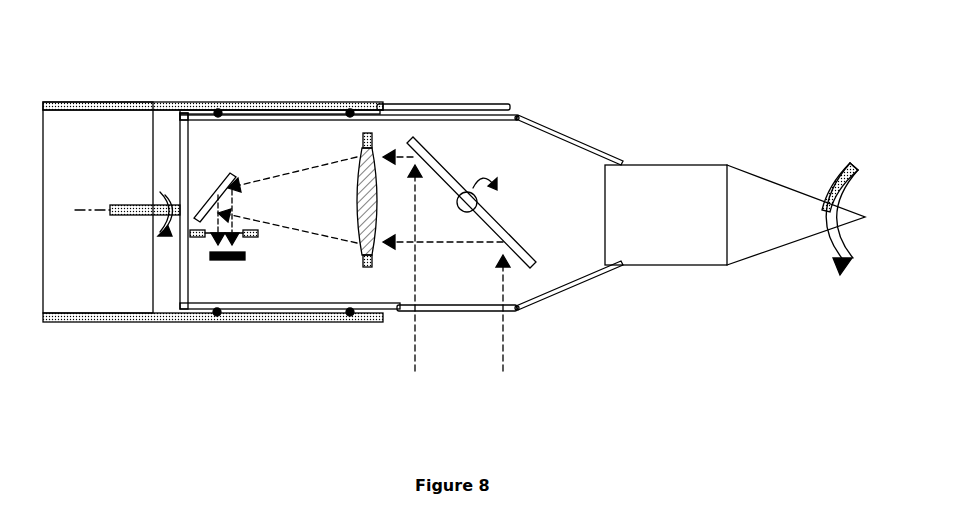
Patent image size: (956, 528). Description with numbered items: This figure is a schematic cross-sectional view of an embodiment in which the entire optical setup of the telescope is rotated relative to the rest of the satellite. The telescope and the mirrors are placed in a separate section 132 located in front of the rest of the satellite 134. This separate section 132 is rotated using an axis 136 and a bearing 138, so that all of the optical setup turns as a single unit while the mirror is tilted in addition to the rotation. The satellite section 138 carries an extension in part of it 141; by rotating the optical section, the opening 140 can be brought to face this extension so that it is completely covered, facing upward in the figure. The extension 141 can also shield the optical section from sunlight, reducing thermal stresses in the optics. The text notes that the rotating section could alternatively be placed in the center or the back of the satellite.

The separate section 132 is at (538, 104).
The rest of the satellite 134 is at (75, 90).
The axis 136 is at (133, 192).
The bearing 138 is at (326, 94).
The opening 140 is at (500, 325).
The extension 141 is at (448, 96).